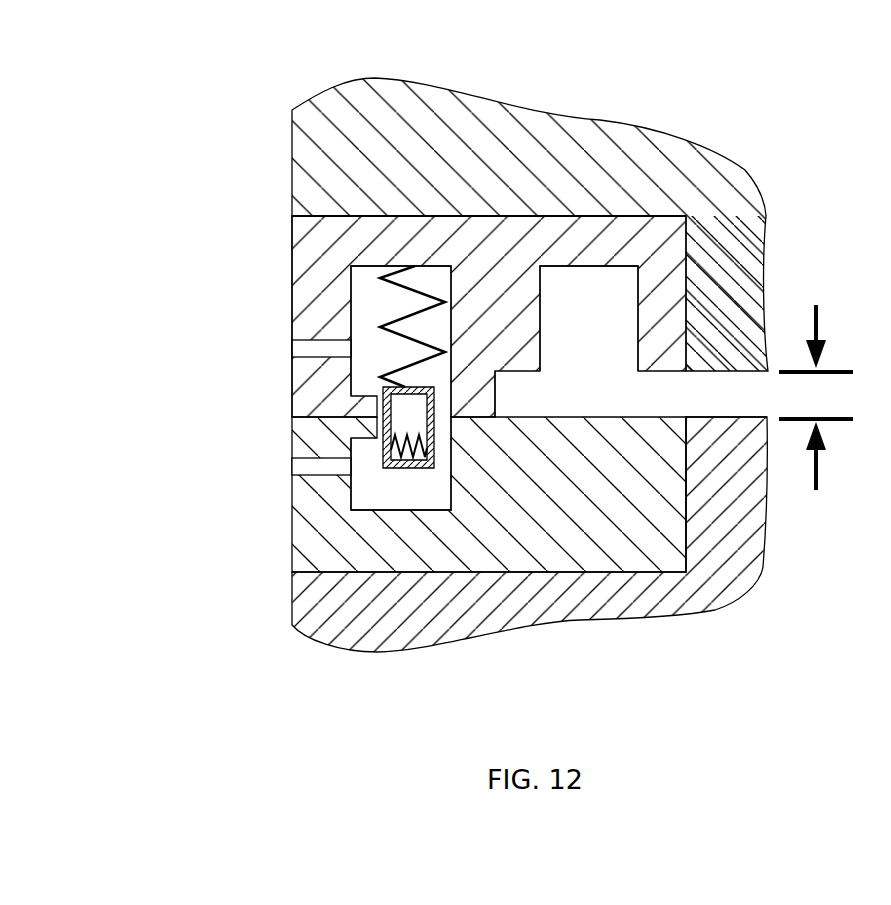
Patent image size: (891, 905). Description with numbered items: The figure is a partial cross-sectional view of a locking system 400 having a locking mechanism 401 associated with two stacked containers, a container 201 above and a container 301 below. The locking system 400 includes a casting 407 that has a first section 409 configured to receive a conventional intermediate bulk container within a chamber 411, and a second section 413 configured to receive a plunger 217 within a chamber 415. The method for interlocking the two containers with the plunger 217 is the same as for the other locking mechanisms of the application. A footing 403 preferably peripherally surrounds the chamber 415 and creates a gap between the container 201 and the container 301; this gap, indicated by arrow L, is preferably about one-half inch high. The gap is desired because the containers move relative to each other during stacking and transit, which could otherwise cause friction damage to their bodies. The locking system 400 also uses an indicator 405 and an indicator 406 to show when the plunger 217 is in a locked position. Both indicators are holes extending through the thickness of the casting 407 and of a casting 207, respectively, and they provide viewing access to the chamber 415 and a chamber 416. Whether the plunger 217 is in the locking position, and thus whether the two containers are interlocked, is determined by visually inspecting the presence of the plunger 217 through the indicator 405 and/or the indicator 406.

The locking system 400 is at (140, 88).
The locking mechanism 401 is at (195, 383).
The second section 413 is at (398, 215).
The first section 409 is at (583, 215).
The container 201 is at (745, 145).
The casting 407 is at (689, 238).
The chamber 411 is at (623, 295).
The footing 403 is at (496, 401).
The chamber 415 is at (355, 313).
The indicator 405 is at (310, 337).
The plunger 217 is at (380, 448).
The indicator 406 is at (310, 483).
The chamber 416 is at (362, 490).
The casting 207 is at (687, 551).
The container 301 is at (753, 588).
The gap L is at (818, 330).